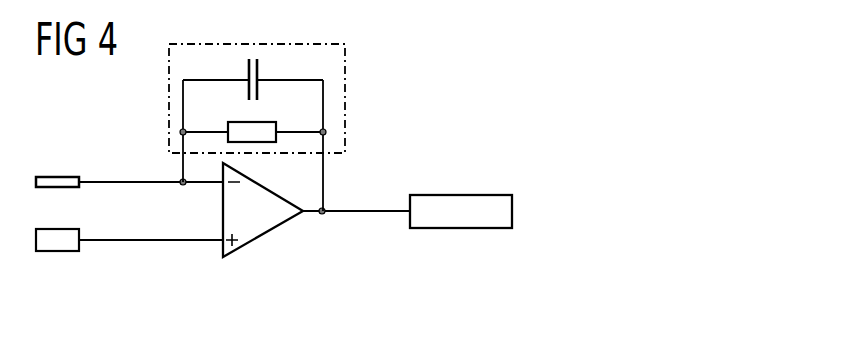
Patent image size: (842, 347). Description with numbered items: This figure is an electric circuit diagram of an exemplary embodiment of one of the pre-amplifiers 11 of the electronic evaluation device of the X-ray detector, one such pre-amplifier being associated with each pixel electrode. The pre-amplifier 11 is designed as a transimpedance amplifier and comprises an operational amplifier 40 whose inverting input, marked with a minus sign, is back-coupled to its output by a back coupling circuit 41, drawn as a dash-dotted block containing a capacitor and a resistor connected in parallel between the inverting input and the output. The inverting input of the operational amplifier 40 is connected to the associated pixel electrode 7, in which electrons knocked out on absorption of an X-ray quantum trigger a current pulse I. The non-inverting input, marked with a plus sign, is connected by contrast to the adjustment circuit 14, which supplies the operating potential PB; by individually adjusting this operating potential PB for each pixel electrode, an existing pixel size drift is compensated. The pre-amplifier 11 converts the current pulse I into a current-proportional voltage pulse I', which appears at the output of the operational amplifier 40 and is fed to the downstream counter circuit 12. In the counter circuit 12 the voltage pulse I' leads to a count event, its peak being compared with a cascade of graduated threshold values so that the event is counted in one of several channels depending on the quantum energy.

The pixel electrode 7 is at (58, 177).
The pre-amplifier 11 is at (459, 90).
The counter circuit 12 is at (467, 193).
The adjustment circuit 14 is at (58, 252).
The operational amplifier 40 is at (263, 237).
The back coupling circuit 41 is at (347, 90).
The current pulse I is at (115, 145).
The voltage pulse I' is at (390, 172).
The operating potential PB is at (135, 242).